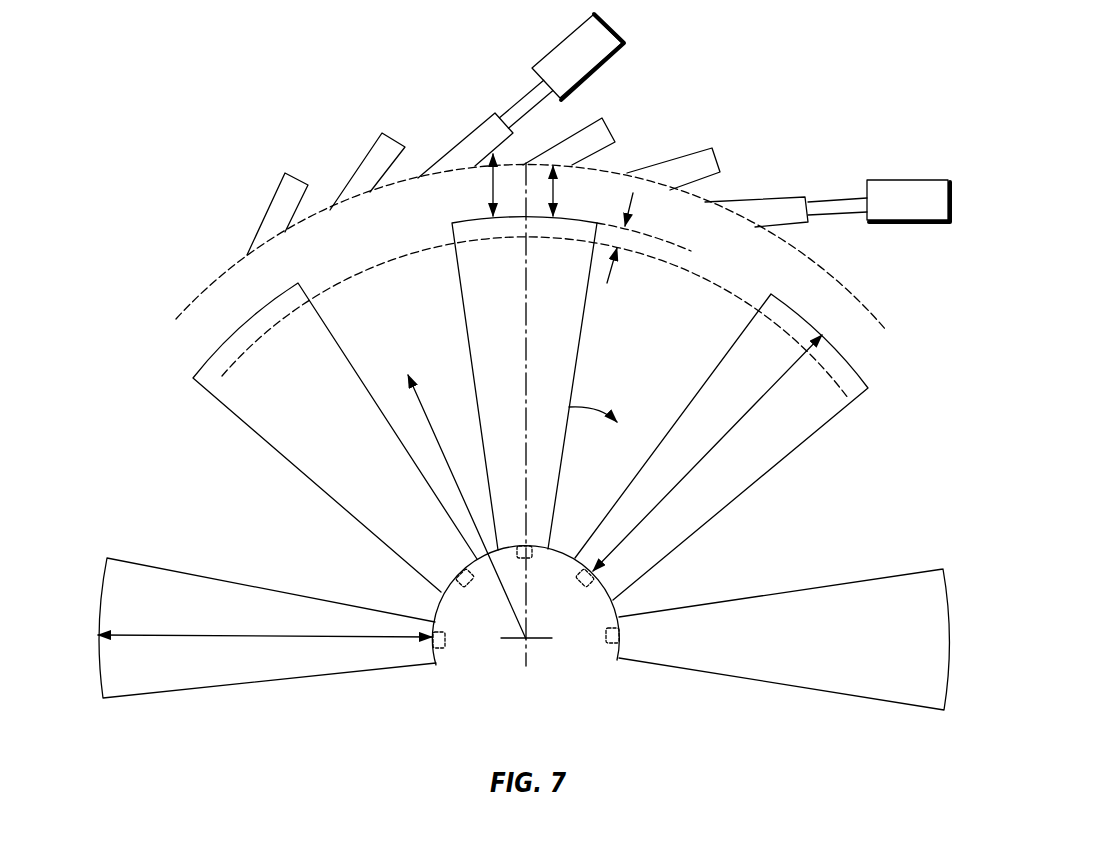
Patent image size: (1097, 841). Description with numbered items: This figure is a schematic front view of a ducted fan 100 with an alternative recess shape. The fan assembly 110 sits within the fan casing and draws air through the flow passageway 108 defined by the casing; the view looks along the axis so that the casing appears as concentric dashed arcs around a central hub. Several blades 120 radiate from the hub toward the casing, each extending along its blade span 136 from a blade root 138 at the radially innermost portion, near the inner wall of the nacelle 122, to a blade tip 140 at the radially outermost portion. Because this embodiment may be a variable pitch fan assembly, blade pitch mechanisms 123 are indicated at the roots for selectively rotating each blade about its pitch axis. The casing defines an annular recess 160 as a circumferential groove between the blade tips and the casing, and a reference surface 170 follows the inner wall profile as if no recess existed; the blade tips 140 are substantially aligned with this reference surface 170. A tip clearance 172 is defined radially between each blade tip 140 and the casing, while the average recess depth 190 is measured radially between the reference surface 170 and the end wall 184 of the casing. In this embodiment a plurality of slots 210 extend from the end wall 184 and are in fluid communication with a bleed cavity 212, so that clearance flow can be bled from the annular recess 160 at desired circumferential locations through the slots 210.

The ducted fan 100 is at (160, 162).
The flow passageway 108 is at (443, 507).
The fan assembly 110 is at (429, 697).
The blade 120 is at (524, 463).
The nacelle 122 is at (614, 596).
The blade pitch mechanism 123 is at (446, 641).
The blade span 136 is at (236, 637).
The blade root 138 is at (431, 664).
The blade tip 140 is at (100, 588).
The annular recess 160 is at (360, 232).
The reference surface 170 is at (698, 277).
The tip clearance 172 is at (557, 188).
The end wall 184 is at (708, 200).
The average recess depth 190 is at (492, 191).
The slot 210 is at (457, 143).
The bleed cavity 212 is at (741, 118).